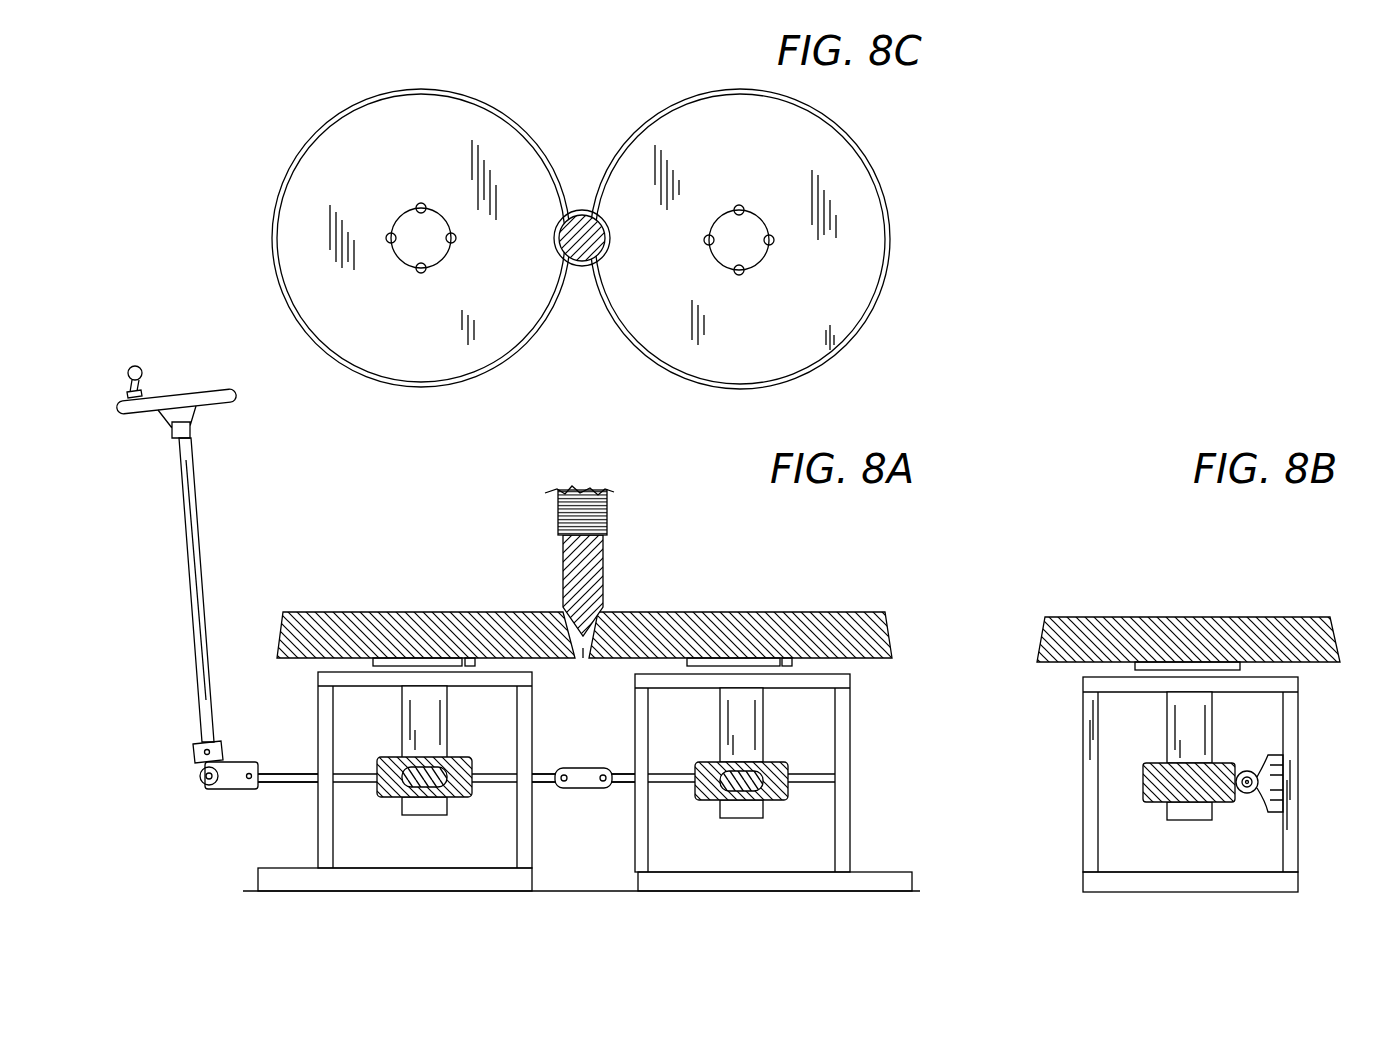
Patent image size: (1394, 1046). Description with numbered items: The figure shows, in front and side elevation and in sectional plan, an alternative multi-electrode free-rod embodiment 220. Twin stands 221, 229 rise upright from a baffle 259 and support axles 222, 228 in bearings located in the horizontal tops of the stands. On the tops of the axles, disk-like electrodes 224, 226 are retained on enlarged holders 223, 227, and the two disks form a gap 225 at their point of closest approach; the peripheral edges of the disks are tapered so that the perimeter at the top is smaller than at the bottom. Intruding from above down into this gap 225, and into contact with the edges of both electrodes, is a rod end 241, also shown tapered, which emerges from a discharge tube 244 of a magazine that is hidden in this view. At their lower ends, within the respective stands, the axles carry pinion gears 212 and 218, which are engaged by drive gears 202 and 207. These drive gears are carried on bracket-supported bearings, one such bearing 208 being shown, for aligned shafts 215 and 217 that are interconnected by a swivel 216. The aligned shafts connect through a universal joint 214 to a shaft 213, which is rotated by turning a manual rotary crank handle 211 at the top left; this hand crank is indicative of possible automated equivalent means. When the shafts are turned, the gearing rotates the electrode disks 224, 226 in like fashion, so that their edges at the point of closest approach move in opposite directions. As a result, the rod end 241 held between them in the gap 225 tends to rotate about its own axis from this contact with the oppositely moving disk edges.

In FIG. 8A, the drive gear 202 is at (405, 757).
In FIG. 8A, the drive gear 207 is at (738, 763).
In FIG. 8B, the drive gear 207 is at (1250, 795).
In FIG. 8B, the bracket-supported bearing 208 is at (1260, 778).
In FIG. 8A, the manual rotary crank handle 211 is at (225, 345).
In FIG. 8A, the pinion gear 212 is at (412, 757).
In FIG. 8A, the shaft 213 is at (203, 618).
In FIG. 8A, the universal joint 214 is at (213, 786).
In FIG. 8A, the shaft 215 is at (290, 773).
In FIG. 8A, the swivel 216 is at (578, 788).
In FIG. 8A, the shaft 217 is at (673, 773).
In FIG. 8A, the pinion gear 218 is at (777, 760).
In FIG. 8B, the pinion gear 218 is at (1147, 803).
In FIG. 8C, the multi-electrode free-rod embodiment 220 is at (690, 47).
In FIG. 8A, the multi-electrode free-rod embodiment 220 is at (374, 572).
In FIG. 8B, the multi-electrode free-rod embodiment 220 is at (1198, 548).
In FIG. 8A, the stand 221 is at (323, 800).
In FIG. 8C, the axle 222 is at (413, 233).
In FIG. 8A, the axle 222 is at (430, 808).
In FIG. 8A, the enlarged holder 223 is at (468, 658).
In FIG. 8C, the disk-like electrode 224 is at (311, 172).
In FIG. 8A, the disk-like electrode 224 is at (443, 628).
In FIG. 8B, the disk-like electrode 224 is at (1228, 662).
In FIG. 8A, the gap 225 is at (583, 648).
In FIG. 8C, the disk-like electrode 226 is at (855, 225).
In FIG. 8A, the disk-like electrode 226 is at (767, 625).
In FIG. 8B, the disk-like electrode 226 is at (1125, 612).
In FIG. 8A, the enlarged holder 227 is at (785, 663).
In FIG. 8A, the axle 228 is at (735, 808).
In FIG. 8B, the axle 228 is at (1175, 725).
In FIG. 8A, the stand 229 is at (843, 852).
In FIG. 8B, the stand 229 is at (1088, 772).
In FIG. 8C, the rod end 241 is at (575, 210).
In FIG. 8A, the rod end 241 is at (590, 580).
In FIG. 8C, the discharge tube 244 is at (588, 270).
In FIG. 8A, the discharge tube 244 is at (588, 522).
In FIG. 8A, the baffle 259 is at (565, 882).